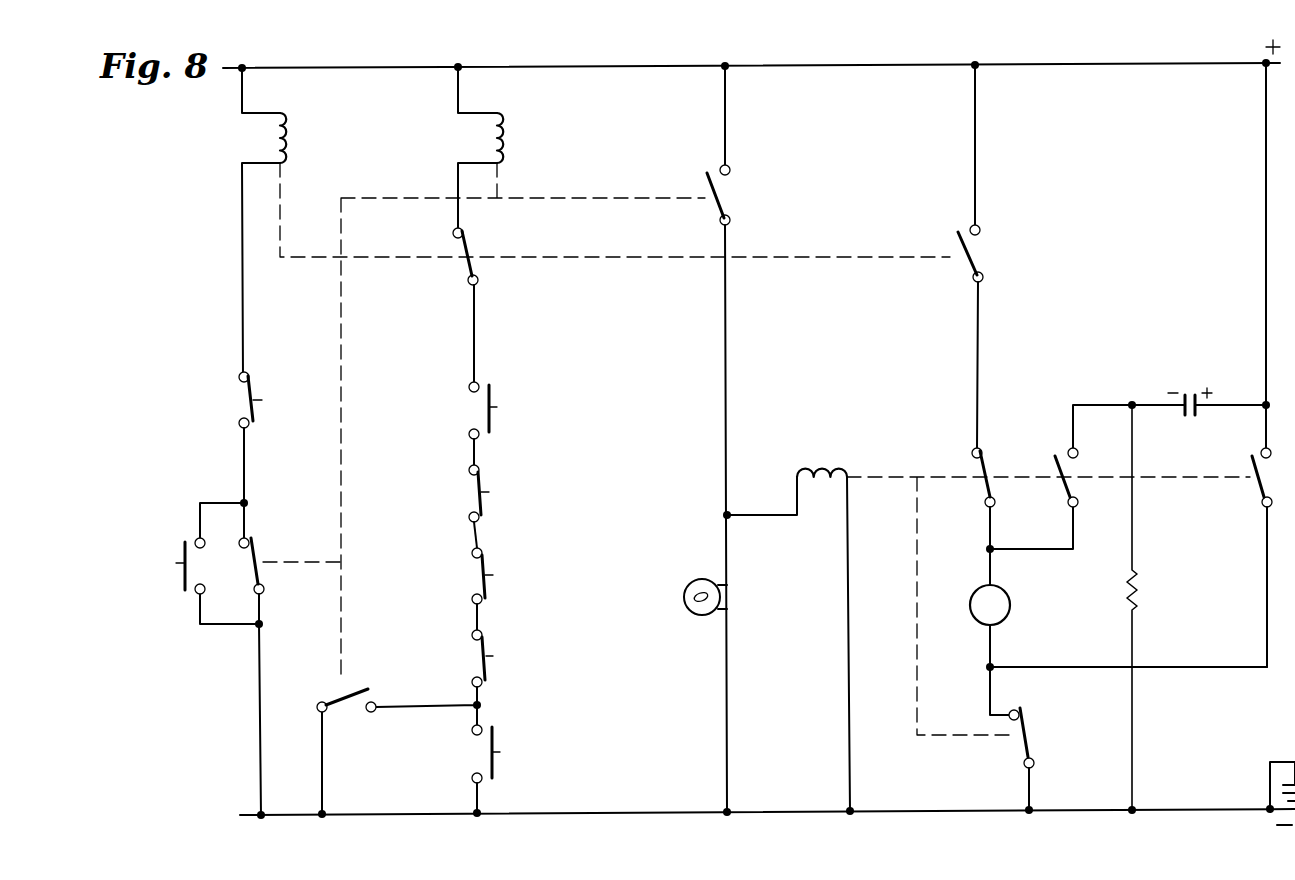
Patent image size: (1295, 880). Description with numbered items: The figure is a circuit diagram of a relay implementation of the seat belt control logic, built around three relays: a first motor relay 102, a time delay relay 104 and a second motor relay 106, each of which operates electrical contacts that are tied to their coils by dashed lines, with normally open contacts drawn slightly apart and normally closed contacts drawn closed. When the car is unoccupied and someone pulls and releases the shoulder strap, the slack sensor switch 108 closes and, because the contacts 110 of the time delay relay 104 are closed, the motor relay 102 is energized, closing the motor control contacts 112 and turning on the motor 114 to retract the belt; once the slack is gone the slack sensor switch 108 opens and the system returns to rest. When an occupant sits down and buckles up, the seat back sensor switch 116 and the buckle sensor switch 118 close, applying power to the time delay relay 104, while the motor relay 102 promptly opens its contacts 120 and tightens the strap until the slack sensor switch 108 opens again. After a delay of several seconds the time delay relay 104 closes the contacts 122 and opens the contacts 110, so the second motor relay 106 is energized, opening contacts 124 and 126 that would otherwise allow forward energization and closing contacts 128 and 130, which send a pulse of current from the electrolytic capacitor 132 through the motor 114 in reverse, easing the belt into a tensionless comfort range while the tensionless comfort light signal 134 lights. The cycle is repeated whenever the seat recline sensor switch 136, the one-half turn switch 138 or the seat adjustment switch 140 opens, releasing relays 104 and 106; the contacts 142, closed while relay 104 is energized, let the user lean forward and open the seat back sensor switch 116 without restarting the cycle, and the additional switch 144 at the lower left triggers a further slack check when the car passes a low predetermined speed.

The first motor relay 102 is at (292, 140).
The time delay relay 104 is at (505, 135).
The second motor relay 106 is at (828, 462).
The slack sensor switch 108 is at (254, 383).
The contacts 110 is at (258, 551).
The motor control contacts 112 is at (980, 248).
The motor 114 is at (1008, 613).
The seat back sensor switch 116 is at (476, 757).
The buckle sensor switch 118 is at (482, 413).
The contacts 120 is at (470, 240).
The contacts 122 is at (727, 192).
The contacts 124 is at (988, 452).
The contacts 126 is at (1030, 730).
The contacts 128 is at (1062, 452).
The contacts 130 is at (1257, 488).
The electrolytic capacitor 132 is at (1188, 418).
The tensionless comfort light signal 134 is at (682, 605).
The seat recline sensor switch 136 is at (470, 493).
The one-half turn switch 138 is at (476, 577).
The seat adjustment switch 140 is at (476, 663).
The contacts 142 is at (338, 712).
The additional switch 144 is at (188, 600).